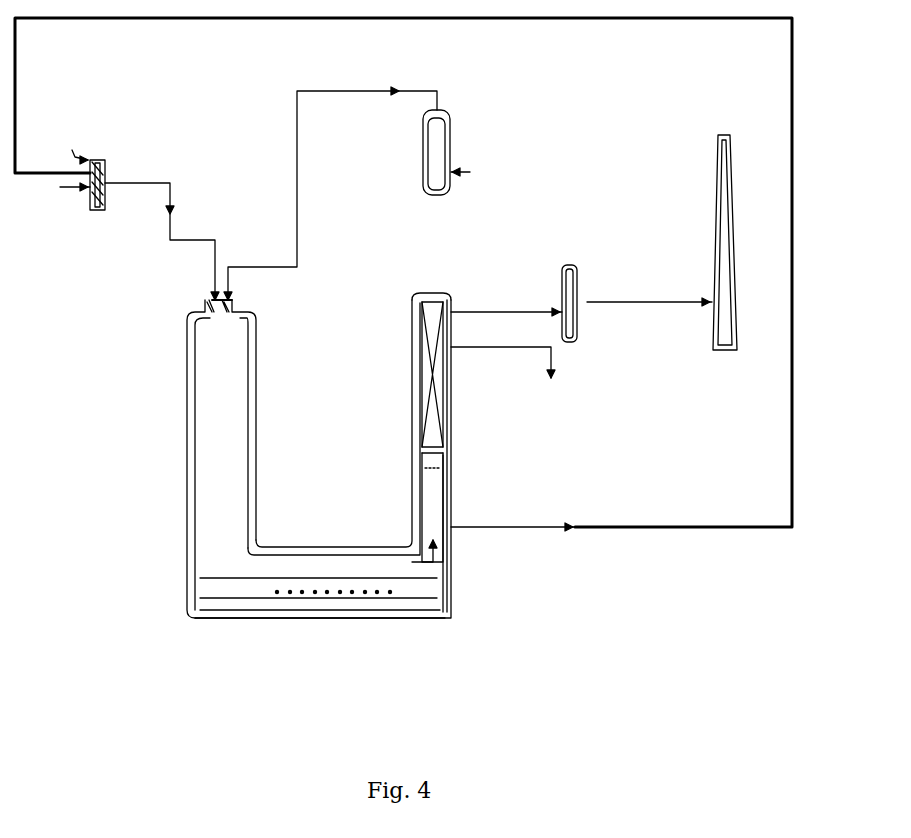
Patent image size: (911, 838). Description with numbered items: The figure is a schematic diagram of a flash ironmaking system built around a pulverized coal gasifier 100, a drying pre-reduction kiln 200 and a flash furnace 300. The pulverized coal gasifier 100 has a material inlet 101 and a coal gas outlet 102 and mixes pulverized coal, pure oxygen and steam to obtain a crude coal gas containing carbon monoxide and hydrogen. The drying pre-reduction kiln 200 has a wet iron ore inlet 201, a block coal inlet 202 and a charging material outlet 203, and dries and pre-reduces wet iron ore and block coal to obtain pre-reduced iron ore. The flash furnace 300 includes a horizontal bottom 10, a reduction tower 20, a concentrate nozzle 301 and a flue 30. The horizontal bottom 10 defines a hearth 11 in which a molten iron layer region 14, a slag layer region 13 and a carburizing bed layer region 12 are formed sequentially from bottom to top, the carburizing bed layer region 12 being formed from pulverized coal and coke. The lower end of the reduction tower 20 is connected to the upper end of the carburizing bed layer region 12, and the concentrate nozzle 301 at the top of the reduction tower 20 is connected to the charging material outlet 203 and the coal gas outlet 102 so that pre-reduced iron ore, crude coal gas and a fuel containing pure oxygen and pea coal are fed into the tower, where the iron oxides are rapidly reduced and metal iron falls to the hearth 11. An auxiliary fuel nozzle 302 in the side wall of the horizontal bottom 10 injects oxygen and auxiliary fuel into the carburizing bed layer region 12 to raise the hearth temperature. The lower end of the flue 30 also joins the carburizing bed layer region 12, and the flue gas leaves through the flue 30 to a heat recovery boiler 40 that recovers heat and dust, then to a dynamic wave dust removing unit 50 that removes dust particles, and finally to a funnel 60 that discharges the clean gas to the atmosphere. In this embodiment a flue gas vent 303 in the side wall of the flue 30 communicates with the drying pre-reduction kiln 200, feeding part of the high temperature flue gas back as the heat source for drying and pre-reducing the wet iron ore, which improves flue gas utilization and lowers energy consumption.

The horizontal bottom 10 is at (430, 592).
The hearth 11 is at (288, 690).
The carburizing bed layer region 12 is at (217, 592).
The slag layer region 13 is at (213, 607).
The molten iron layer region 14 is at (293, 612).
The reduction tower 20 is at (207, 408).
The flue 30 is at (434, 510).
The heat recovery boiler 40 is at (413, 307).
The dynamic wave dust removing unit 50 is at (563, 290).
The funnel 60 is at (715, 255).
The pulverized coal gasifier 100 is at (436, 145).
The material inlet 101 is at (455, 190).
The coal gas outlet 102 is at (434, 110).
The drying pre-reduction kiln 200 is at (105, 158).
The wet iron ore inlet 201 is at (92, 153).
The block coal inlet 202 is at (90, 192).
The charging material outlet 203 is at (105, 196).
The flash furnace 300 is at (315, 545).
The concentrate nozzle 301 is at (230, 302).
The auxiliary fuel nozzle 302 is at (377, 594).
The flue gas vent 303 is at (458, 530).